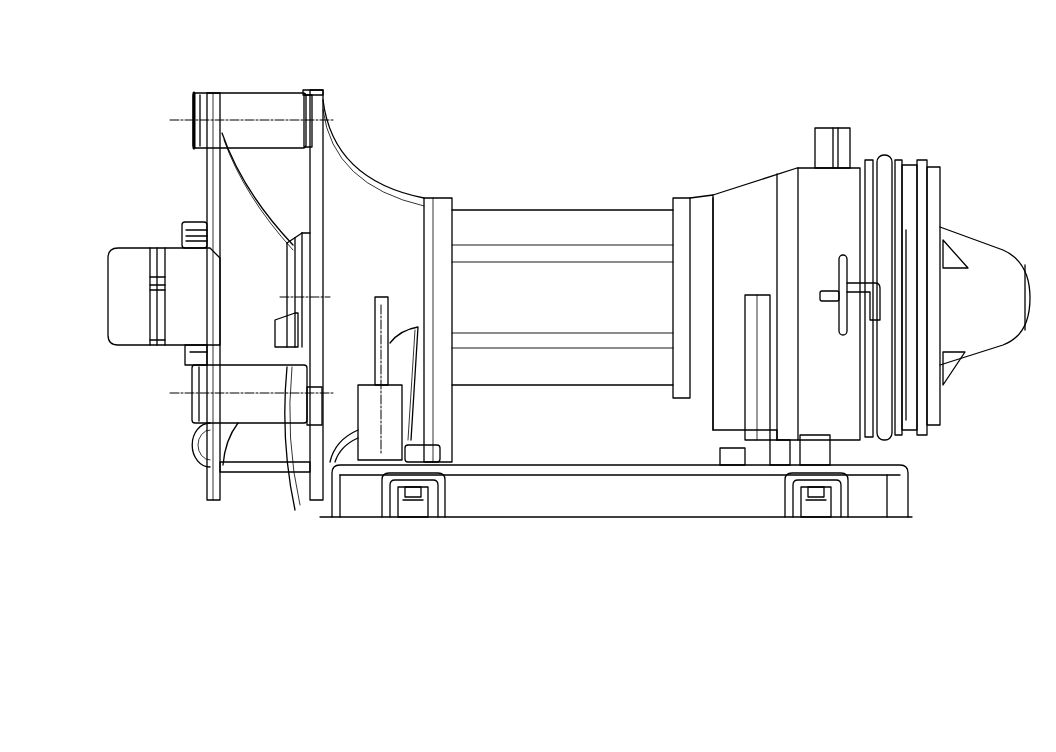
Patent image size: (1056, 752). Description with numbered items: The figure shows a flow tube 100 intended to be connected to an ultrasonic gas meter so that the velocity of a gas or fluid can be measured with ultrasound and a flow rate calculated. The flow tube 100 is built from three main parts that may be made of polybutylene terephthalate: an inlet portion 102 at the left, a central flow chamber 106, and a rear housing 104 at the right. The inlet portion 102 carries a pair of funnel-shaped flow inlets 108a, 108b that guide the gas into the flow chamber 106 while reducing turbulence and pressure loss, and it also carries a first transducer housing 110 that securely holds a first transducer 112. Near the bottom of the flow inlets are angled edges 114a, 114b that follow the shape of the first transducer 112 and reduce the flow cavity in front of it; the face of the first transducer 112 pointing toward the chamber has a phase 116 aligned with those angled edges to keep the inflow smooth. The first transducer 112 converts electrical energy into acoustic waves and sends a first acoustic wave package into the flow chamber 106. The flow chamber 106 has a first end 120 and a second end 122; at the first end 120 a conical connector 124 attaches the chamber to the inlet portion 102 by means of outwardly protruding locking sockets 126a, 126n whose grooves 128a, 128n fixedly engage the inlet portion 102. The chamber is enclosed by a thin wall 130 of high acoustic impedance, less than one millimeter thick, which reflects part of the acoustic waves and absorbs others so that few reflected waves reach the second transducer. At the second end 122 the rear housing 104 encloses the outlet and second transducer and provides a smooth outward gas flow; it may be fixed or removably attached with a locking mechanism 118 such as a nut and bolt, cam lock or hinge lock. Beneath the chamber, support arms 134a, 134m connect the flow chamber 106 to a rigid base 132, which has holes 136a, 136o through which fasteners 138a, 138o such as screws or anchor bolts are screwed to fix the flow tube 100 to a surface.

The flow tube 100 is at (202, 48).
The inlet portion 102 is at (256, 88).
The rear housing 104 is at (976, 222).
The flow chamber 106 is at (568, 178).
The flow inlet 108a is at (298, 175).
The flow inlet 108b is at (290, 450).
The first transducer housing 110 is at (152, 248).
The first transducer 112 is at (305, 282).
The angled edge 114a is at (298, 238).
The angled edge 114b is at (295, 510).
The phase 116 is at (302, 245).
The locking mechanism 118 is at (841, 254).
The first end 120 is at (333, 106).
The second end 122 is at (801, 160).
The connector 124 is at (395, 192).
The locking socket 126a is at (190, 116).
The locking socket 126n is at (190, 395).
The groove 128a is at (210, 125).
The groove 128n is at (208, 385).
The wall 130 is at (625, 210).
The base 132 is at (893, 493).
The support arm 134a is at (382, 400).
The support arm 134m is at (745, 400).
The hole 136a is at (405, 500).
The hole 136o is at (815, 500).
The fastener 138a is at (435, 487).
The fastener 138o is at (790, 485).